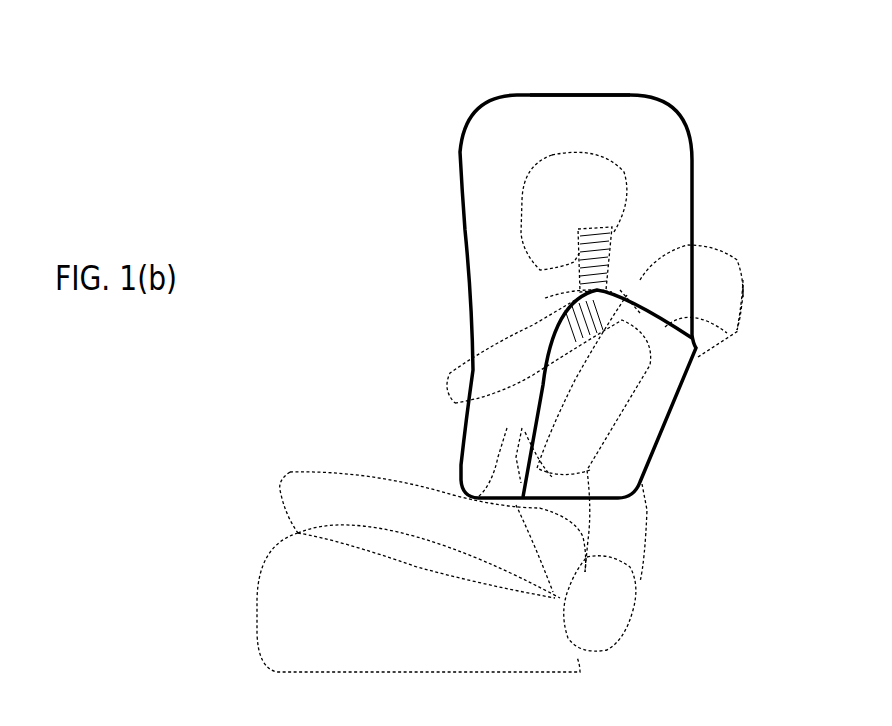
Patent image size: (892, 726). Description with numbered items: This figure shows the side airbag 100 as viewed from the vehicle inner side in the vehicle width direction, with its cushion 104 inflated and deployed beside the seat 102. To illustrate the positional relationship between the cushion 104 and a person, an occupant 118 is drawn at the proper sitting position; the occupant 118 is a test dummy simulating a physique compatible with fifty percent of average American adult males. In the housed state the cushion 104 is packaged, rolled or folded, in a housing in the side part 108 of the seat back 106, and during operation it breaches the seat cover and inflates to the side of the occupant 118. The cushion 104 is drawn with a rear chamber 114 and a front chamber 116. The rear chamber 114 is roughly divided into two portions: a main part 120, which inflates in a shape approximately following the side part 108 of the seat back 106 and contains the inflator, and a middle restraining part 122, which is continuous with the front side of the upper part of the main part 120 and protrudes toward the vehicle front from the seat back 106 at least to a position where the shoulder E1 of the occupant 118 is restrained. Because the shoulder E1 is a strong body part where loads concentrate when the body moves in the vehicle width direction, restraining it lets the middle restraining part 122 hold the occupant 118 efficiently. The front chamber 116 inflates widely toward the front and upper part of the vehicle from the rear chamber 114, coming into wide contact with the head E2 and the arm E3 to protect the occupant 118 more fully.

The side airbag 100 is at (397, 138).
The seat 102 is at (645, 558).
The cushion 104 is at (676, 119).
The seat back 106 is at (720, 253).
The side part 108 is at (723, 293).
The rear chamber 114 is at (737, 336).
The front chamber 116 is at (597, 106).
The occupant 118 is at (623, 177).
The main part 120 is at (647, 423).
The middle restraining part 122 is at (563, 292).
The shoulder E1 is at (623, 282).
The head E2 is at (548, 178).
The arm E3 is at (535, 368).